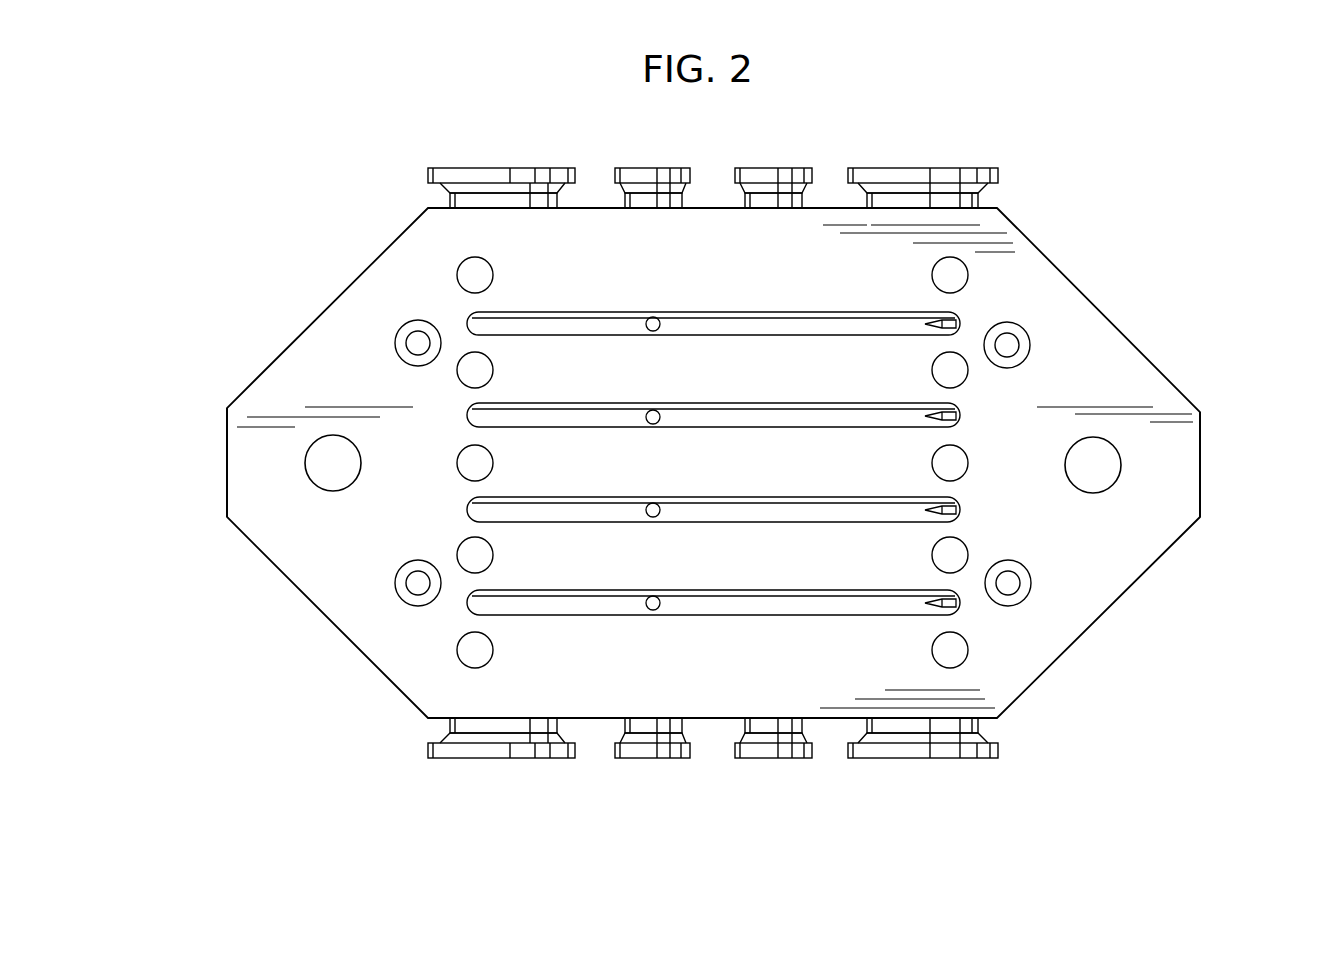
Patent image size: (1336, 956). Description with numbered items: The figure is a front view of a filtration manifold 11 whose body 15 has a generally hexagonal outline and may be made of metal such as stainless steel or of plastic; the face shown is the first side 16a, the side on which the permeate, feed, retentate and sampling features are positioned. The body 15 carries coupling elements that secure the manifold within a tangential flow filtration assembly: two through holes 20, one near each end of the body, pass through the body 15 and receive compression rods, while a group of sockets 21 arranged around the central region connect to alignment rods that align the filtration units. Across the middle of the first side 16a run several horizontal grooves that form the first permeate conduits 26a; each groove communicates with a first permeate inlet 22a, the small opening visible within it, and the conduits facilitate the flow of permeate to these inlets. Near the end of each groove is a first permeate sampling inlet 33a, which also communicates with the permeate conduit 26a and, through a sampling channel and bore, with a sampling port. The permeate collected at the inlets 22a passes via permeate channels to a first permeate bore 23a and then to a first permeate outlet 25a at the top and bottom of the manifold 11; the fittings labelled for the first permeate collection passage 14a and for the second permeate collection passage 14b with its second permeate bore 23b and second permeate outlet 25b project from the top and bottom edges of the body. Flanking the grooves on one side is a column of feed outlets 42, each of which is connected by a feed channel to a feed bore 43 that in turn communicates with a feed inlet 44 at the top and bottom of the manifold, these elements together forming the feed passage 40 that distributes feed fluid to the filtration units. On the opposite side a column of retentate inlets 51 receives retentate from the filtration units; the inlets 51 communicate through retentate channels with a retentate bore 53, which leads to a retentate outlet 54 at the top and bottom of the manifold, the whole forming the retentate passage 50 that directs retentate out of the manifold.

The manifold 11 is at (401, 704).
The body 15 is at (268, 457).
The first side 16a is at (1172, 486).
The through holes 20 is at (323, 472).
The sockets 21 is at (395, 342).
The feed outlets 42 is at (470, 276).
The retentate inlets 51 is at (955, 370).
The feed passage 40 is at (459, 461).
The feed bore 43 is at (459, 461).
The feed inlet 44 is at (492, 168).
The first port fitting 14a is at (658, 455).
The first permeate bore 23a is at (658, 455).
The first permeate outlet 25a is at (675, 168).
The second port fitting 14b is at (812, 452).
The second port flange 23b is at (812, 452).
The second port opening 25b is at (792, 168).
The retentate passage 50 is at (951, 451).
The retentate bore 53 is at (951, 451).
The retentate outlet 54 is at (913, 168).
The first permeate inlet 22a is at (651, 411).
The first permeate conduits 26a is at (713, 463).
The first permeate sampling inlets 33a is at (937, 410).